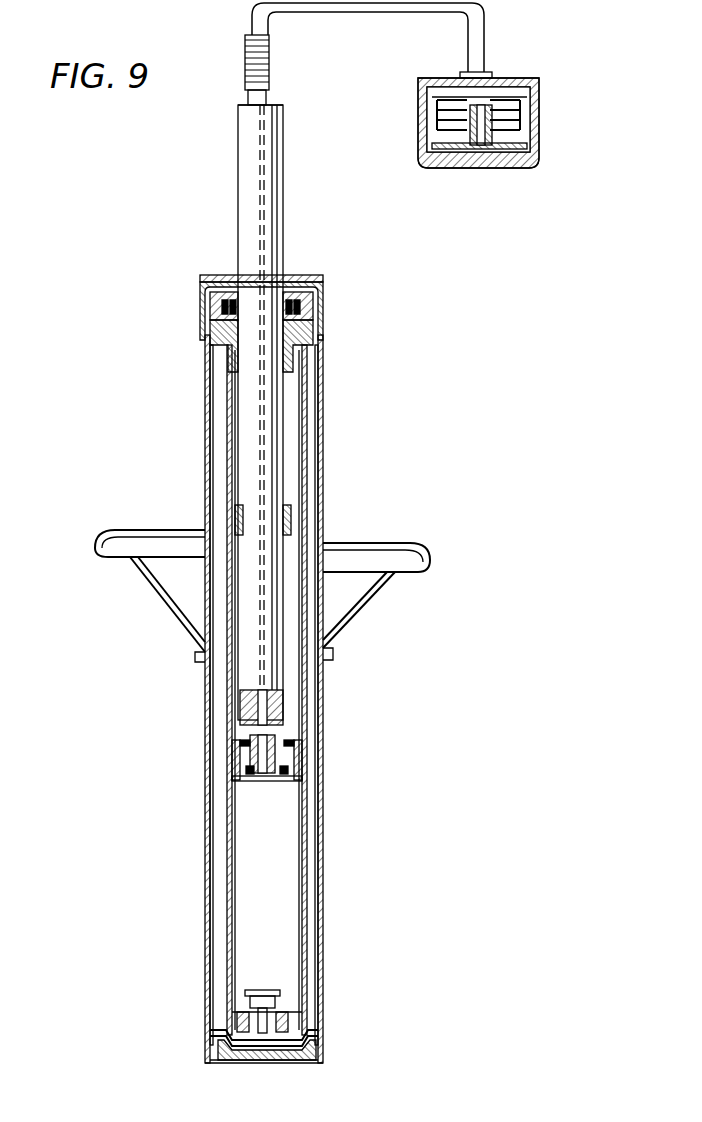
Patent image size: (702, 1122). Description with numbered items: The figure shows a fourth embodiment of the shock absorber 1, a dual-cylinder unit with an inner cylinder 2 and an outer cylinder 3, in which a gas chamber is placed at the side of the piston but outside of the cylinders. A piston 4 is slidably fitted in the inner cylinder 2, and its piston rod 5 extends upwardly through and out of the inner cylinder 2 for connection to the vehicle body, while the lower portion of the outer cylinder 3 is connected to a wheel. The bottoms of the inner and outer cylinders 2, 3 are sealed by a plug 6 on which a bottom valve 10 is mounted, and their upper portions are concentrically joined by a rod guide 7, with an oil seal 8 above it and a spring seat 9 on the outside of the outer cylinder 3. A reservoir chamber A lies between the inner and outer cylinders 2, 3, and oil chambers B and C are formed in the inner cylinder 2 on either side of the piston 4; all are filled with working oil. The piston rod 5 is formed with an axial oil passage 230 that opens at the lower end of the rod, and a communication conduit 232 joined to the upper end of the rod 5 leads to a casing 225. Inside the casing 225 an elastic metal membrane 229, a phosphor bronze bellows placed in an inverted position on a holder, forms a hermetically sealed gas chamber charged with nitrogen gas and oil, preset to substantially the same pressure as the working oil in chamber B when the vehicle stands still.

The shock absorber 1 is at (327, 442).
The inner cylinder 2 is at (232, 874).
The outer cylinder 3 is at (207, 835).
The piston 4 is at (292, 760).
The piston rod 5 is at (278, 380).
The plug 6 is at (255, 1048).
The rod guide 7 is at (212, 340).
The oil seal 8 is at (232, 306).
The spring seat 9 is at (122, 562).
The bottom valve 10 is at (295, 1005).
The reservoir chamber A is at (228, 798).
The oil chamber B is at (245, 915).
The oil chamber C is at (288, 570).
The casing 225 is at (540, 130).
The elastic metal membrane 229 is at (420, 135).
The axial oil passage 230 is at (258, 208).
The communication conduit 232 is at (345, 10).